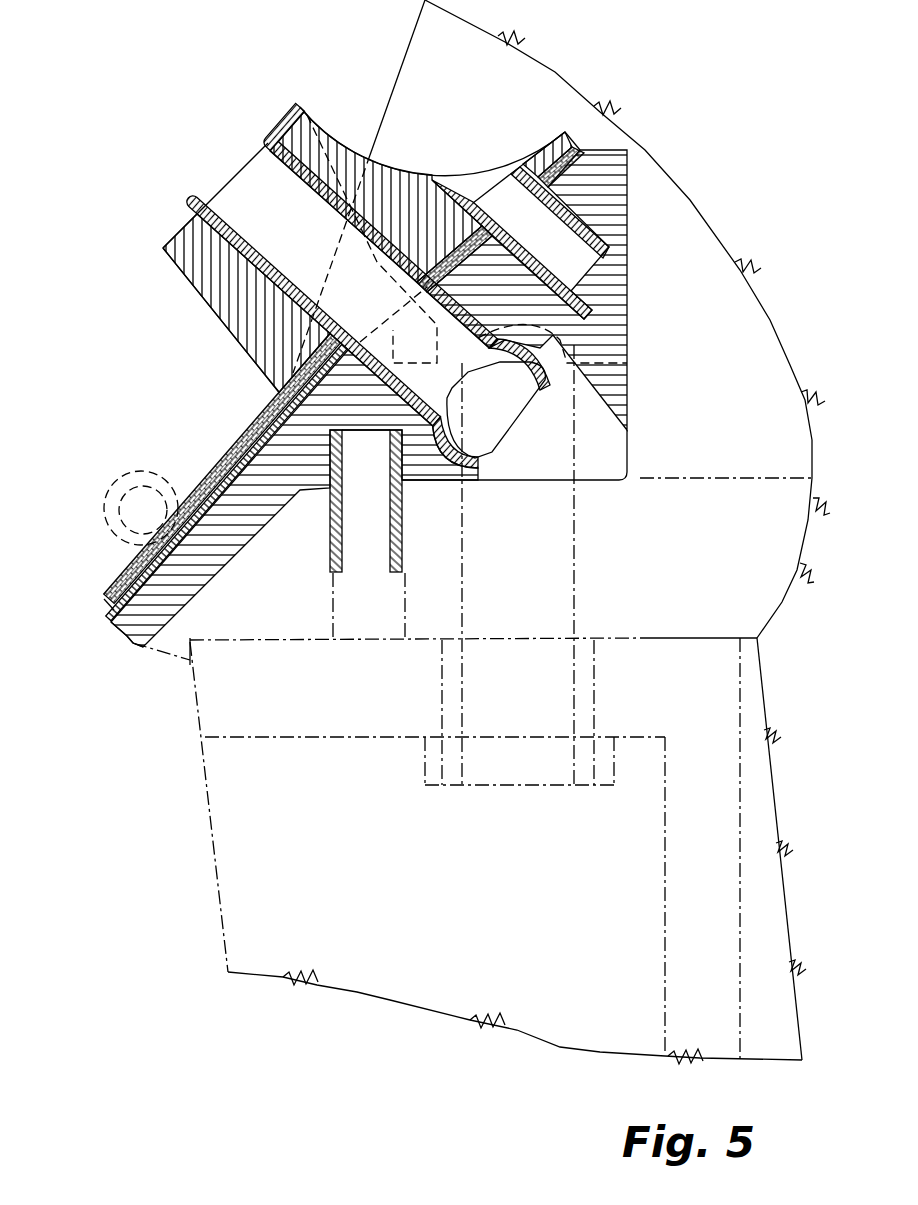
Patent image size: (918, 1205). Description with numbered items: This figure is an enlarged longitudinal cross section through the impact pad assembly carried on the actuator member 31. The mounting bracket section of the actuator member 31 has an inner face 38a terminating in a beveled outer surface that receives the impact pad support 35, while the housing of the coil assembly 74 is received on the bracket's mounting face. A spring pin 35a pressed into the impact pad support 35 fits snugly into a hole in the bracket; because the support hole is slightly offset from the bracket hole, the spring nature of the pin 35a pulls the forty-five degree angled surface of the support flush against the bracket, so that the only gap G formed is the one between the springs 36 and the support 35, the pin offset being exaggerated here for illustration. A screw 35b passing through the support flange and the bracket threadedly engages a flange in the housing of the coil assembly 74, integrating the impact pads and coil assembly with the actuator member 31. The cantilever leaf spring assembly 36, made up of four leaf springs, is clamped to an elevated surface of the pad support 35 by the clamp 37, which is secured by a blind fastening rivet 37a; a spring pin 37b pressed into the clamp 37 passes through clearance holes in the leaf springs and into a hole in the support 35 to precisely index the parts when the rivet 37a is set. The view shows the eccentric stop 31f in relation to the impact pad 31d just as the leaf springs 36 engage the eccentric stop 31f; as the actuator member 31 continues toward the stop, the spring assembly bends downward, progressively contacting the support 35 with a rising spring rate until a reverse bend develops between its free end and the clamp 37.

The actuator member 31 is at (716, 224).
The impact pad 31d is at (192, 300).
The eccentric stop 31f is at (124, 476).
The impact pad support 35 is at (131, 646).
The spring pin 35a is at (335, 555).
The screw 35b is at (600, 350).
The cantilever leaf spring assembly 36 is at (222, 462).
The clamp 37 is at (243, 346).
The blind fastening rivet 37a is at (228, 212).
The spring pin 37b is at (613, 257).
The inner face 38a is at (733, 480).
The coil assembly 74 is at (758, 911).
The gap G is at (110, 605).